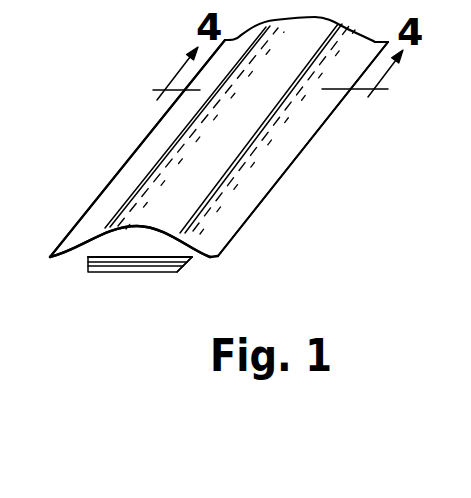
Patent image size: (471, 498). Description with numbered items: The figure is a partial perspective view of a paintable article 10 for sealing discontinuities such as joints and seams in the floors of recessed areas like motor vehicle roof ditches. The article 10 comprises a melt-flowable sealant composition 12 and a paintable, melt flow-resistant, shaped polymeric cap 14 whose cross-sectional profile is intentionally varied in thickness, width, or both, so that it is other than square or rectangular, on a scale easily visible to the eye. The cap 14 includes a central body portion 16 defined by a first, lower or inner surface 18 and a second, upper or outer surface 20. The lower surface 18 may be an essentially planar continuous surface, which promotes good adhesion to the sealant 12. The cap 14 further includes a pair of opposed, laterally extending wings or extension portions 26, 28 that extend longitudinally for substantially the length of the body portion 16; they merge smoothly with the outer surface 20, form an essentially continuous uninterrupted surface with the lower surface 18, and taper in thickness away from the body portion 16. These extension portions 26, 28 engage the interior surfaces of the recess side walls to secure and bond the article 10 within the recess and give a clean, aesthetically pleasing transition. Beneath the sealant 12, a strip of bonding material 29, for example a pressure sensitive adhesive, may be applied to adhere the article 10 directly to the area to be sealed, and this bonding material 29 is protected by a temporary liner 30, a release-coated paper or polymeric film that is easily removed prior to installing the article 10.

The paintable article 10 is at (125, 123).
The melt-flowable sealant composition 12 is at (121, 262).
The shaped polymeric cap 14 is at (311, 157).
The central body portion 16 is at (108, 248).
The lower surface 18 is at (191, 258).
The upper surface 20 is at (150, 224).
The extension portion 26 is at (115, 182).
The extension portion 28 is at (244, 190).
The bonding material 29 is at (136, 263).
The temporary liner 30 is at (167, 272).